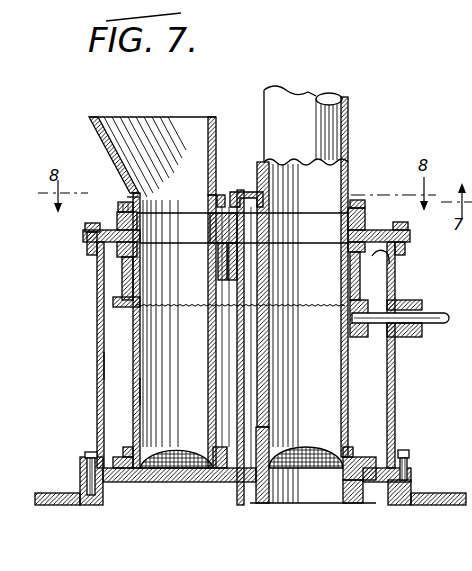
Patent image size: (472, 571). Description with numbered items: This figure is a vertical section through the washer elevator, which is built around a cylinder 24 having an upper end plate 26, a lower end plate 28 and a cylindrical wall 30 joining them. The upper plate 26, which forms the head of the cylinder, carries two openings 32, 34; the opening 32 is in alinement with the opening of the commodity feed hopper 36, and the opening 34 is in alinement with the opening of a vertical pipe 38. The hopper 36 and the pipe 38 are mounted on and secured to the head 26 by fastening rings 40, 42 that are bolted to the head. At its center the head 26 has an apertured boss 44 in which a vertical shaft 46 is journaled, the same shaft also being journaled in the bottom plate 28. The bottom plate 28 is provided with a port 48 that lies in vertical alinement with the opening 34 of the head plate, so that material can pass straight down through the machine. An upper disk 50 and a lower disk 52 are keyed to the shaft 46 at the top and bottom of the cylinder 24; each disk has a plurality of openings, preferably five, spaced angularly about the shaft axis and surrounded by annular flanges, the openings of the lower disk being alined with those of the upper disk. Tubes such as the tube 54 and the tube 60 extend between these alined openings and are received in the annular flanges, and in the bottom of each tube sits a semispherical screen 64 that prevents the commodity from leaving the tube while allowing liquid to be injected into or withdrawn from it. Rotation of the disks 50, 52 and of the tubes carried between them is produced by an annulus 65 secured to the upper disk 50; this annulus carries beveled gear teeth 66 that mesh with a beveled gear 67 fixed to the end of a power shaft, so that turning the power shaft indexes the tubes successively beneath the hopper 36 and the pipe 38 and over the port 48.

The cylinder 24 is at (112, 334).
The upper end plate 26 is at (118, 222).
The lower end plate 28 is at (118, 477).
The cylindrical wall 30 is at (99, 366).
The opening 32 is at (166, 240).
The opening 34 is at (319, 223).
The commodity feed hopper 36 is at (200, 146).
The vertical pipe 38 is at (300, 178).
The fastening ring 40 is at (127, 203).
The fastening ring 42 is at (351, 190).
The apertured boss 44 is at (233, 190).
The vertical shaft 46 is at (243, 382).
The port 48 is at (328, 496).
The upper disk 50 is at (384, 256).
The lower disk 52 is at (366, 455).
The tube 54 is at (348, 375).
The tube 60 is at (135, 391).
The semispherical screen 64 is at (157, 460).
The annulus 65 is at (353, 281).
The beveled gear teeth 66 is at (388, 297).
The beveled gear 67 is at (360, 335).